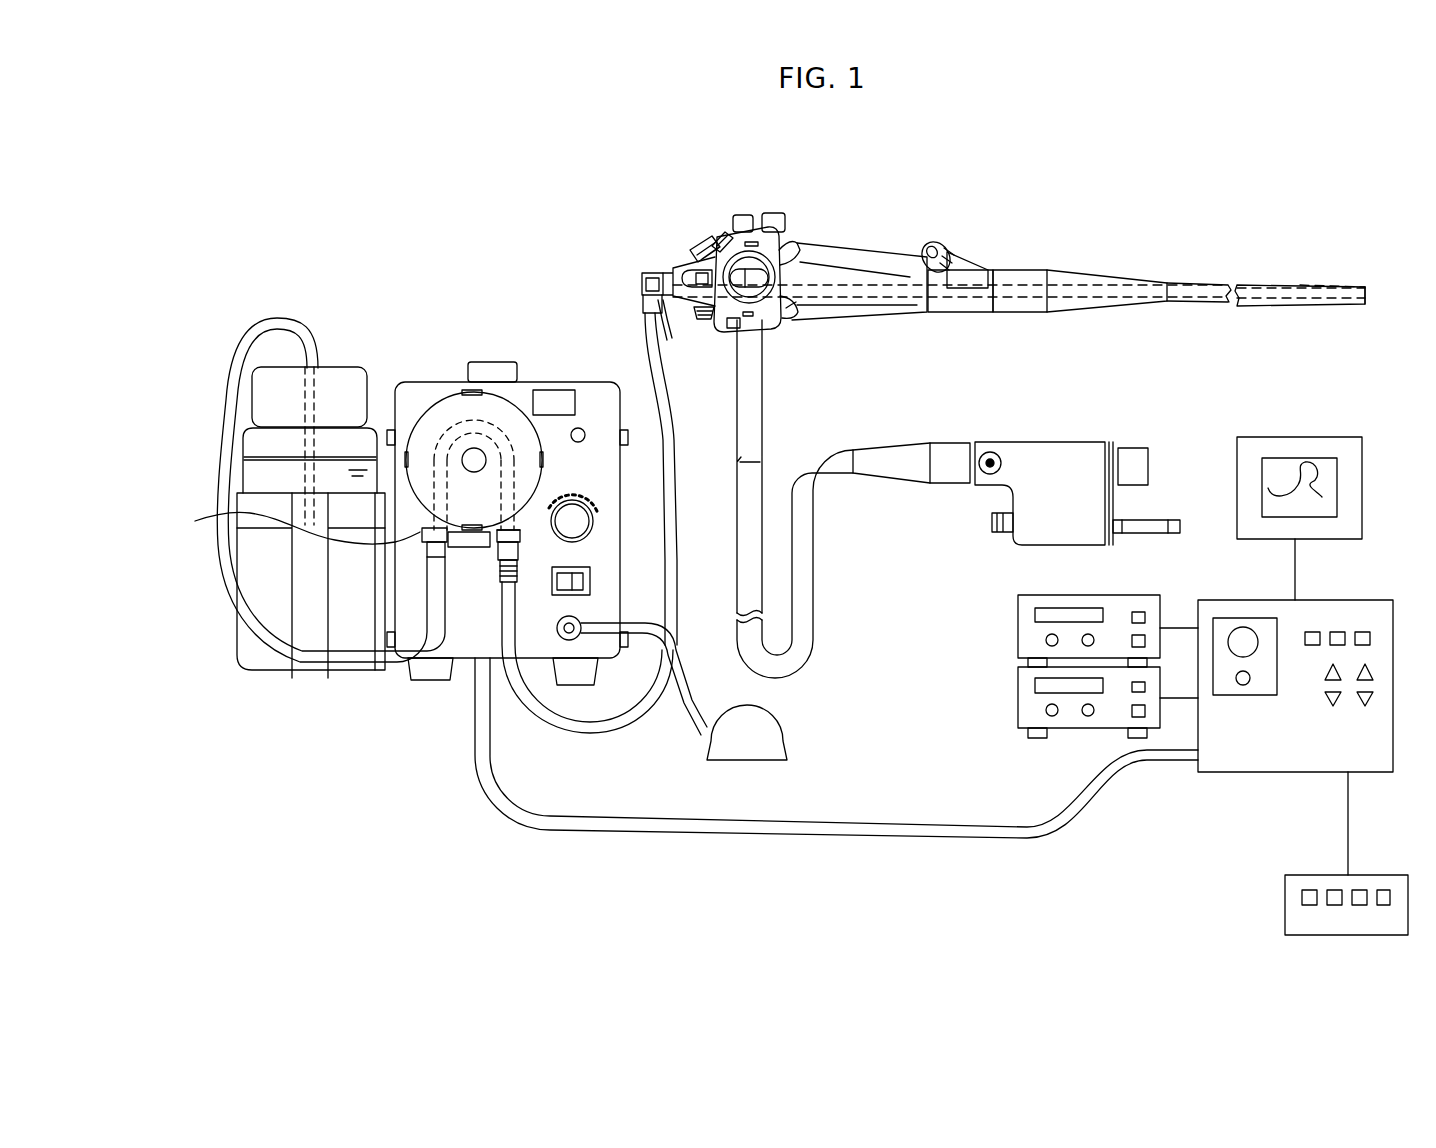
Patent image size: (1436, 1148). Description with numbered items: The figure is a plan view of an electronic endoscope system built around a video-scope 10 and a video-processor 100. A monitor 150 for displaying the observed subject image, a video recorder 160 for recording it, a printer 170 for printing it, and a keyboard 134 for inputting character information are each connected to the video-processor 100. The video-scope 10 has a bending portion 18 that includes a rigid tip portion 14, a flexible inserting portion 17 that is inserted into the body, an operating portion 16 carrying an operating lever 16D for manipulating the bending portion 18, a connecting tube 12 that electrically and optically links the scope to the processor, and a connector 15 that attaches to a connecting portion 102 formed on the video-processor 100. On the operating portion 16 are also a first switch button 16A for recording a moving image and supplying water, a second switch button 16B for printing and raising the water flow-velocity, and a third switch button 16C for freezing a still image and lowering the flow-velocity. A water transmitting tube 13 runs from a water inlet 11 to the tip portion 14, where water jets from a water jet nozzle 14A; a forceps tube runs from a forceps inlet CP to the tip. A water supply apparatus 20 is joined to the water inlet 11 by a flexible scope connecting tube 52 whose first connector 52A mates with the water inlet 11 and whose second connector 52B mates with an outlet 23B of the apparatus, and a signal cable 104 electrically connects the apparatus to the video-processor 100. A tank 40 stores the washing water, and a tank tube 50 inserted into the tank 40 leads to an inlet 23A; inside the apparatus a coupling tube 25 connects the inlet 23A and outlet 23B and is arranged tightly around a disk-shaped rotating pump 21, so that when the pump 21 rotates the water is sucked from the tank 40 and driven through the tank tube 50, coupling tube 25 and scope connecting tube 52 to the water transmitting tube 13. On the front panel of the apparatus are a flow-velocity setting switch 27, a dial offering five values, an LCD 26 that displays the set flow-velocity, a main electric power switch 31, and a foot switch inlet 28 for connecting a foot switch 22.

The video-scope 10 is at (1028, 226).
The water inlet 11 is at (673, 267).
The connecting tube 12 is at (737, 545).
The water transmitting tube 13 is at (1135, 284).
The rigid tip portion 14 is at (1370, 290).
The water jet nozzle 14A is at (1368, 302).
The connector 15 is at (1029, 441).
The operating portion 16 is at (790, 240).
The VTR and water supply switch button 16A is at (702, 320).
The copy and water supplying up switch button 16B is at (700, 240).
The freeze and water supplying down switch button 16C is at (733, 222).
The operating lever 16D is at (796, 316).
The flexible inserting portion 17 is at (1097, 311).
The bending portion 18 is at (1330, 306).
The water supply apparatus 20 is at (490, 331).
The rotating pump 21 is at (440, 445).
The foot switch 22 is at (789, 742).
The inlet 23A is at (197, 523).
The outlet 23B is at (523, 540).
The coupling tube 25 is at (450, 412).
The LCD 26 is at (545, 390).
The flow-velocity setting switch 27 is at (594, 525).
The foot switch inlet 28 is at (580, 637).
The main electric power switch 31 is at (592, 580).
The tank 40 is at (272, 672).
The tank tube 50 is at (393, 665).
The scope connecting tube 52 is at (677, 394).
The first connector 52A is at (645, 273).
The second connector 52B is at (498, 568).
The video-processor 100 is at (1272, 775).
The connecting portion 102 is at (1245, 618).
The signal cable 104 is at (871, 836).
The keyboard 134 is at (1285, 902).
The monitor 150 is at (1298, 437).
The video recorder 160 is at (1018, 628).
The printer 170 is at (1018, 698).
The forceps inlet CP is at (938, 244).